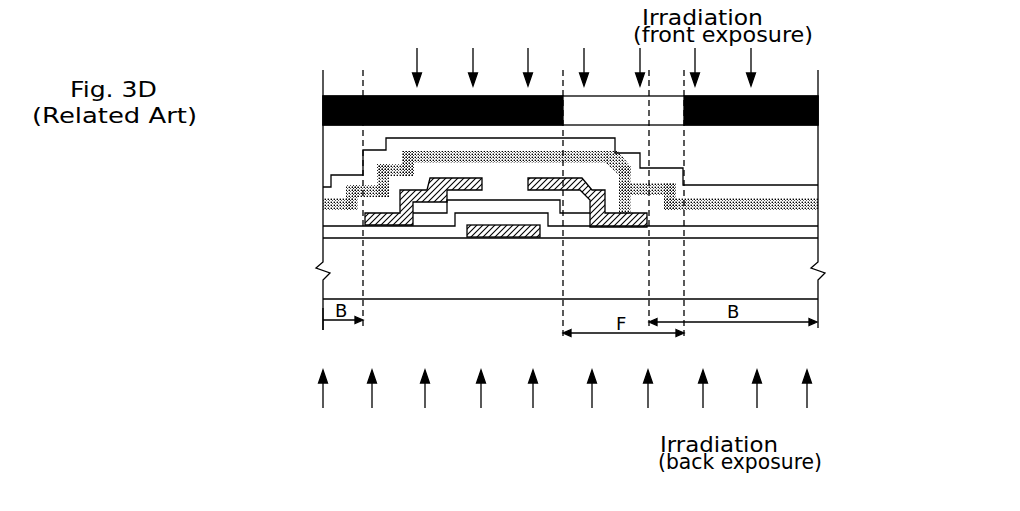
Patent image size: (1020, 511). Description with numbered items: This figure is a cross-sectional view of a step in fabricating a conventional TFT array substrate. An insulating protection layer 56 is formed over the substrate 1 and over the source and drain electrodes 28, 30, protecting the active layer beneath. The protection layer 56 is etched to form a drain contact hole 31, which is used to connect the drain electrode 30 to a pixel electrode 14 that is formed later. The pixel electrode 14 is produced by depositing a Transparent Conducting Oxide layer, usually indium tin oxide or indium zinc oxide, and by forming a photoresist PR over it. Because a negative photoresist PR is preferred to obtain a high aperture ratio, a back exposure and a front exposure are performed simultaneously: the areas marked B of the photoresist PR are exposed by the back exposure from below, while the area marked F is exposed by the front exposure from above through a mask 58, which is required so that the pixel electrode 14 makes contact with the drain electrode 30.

The substrate 1 is at (592, 283).
The pixel electrode 14 is at (814, 207).
The source electrode 28 is at (453, 177).
The drain electrode 30 is at (565, 175).
The drain contact hole 31 is at (626, 168).
The insulating protection layer 56 is at (814, 224).
The mask 58 is at (823, 112).
The photoresist PR is at (814, 187).